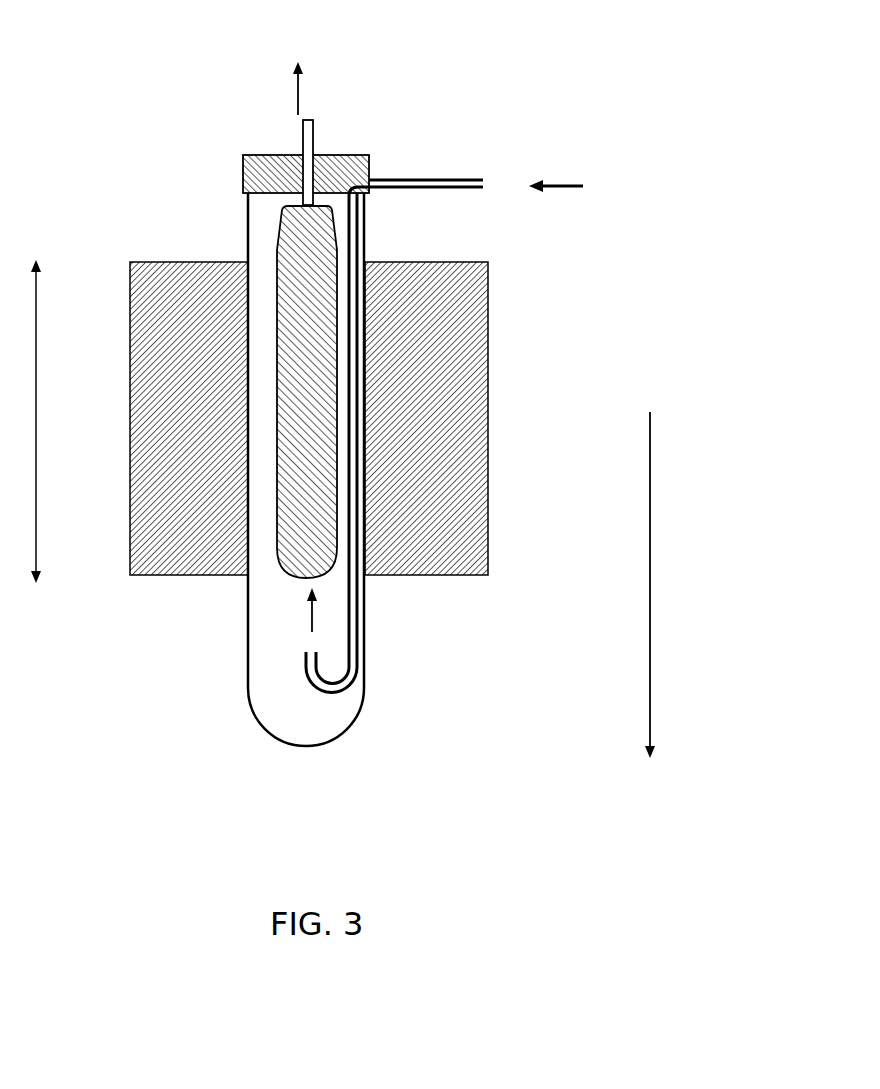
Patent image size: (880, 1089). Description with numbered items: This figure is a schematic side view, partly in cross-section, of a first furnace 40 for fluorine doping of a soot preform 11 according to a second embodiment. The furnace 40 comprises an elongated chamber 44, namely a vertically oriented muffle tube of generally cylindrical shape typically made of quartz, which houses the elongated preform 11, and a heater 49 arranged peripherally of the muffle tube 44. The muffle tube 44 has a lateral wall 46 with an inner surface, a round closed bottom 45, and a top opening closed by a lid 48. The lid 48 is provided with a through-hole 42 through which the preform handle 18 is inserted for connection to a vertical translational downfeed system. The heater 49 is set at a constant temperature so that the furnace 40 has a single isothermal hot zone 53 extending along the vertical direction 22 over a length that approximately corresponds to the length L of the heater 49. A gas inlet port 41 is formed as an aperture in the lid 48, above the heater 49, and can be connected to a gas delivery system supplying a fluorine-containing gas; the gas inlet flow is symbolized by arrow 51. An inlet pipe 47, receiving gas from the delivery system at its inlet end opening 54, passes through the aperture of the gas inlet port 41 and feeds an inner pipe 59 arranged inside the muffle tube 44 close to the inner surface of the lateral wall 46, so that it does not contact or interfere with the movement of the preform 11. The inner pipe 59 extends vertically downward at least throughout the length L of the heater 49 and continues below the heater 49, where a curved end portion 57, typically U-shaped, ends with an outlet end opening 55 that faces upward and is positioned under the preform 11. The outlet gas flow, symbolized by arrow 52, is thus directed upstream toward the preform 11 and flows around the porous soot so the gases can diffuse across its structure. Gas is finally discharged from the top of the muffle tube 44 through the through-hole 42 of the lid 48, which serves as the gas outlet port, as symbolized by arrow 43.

The first furnace 40 is at (455, 71).
The outlet gas flow arrow 43 is at (300, 80).
The lid 48 is at (243, 172).
The through-hole 42 is at (297, 152).
The preform handle 18 is at (313, 138).
The gas inlet port 41 is at (369, 180).
The inlet end opening 54 is at (485, 180).
The gas inlet flow arrow 51 is at (560, 186).
The elongated chamber 44 is at (240, 219).
The soot preform 11 is at (276, 258).
The inlet pipe 47 is at (430, 188).
The inner pipe 59 is at (370, 246).
The heater 49 is at (488, 463).
The length of the heater L is at (25, 421).
The vertical direction 22 is at (652, 462).
The hot zone 53 is at (262, 525).
The outlet gas flow arrow 52 is at (310, 612).
The outlet end opening 55 is at (302, 652).
The lateral wall 46 is at (366, 668).
The curved end portion 57 is at (348, 692).
The closed bottom 45 is at (298, 745).